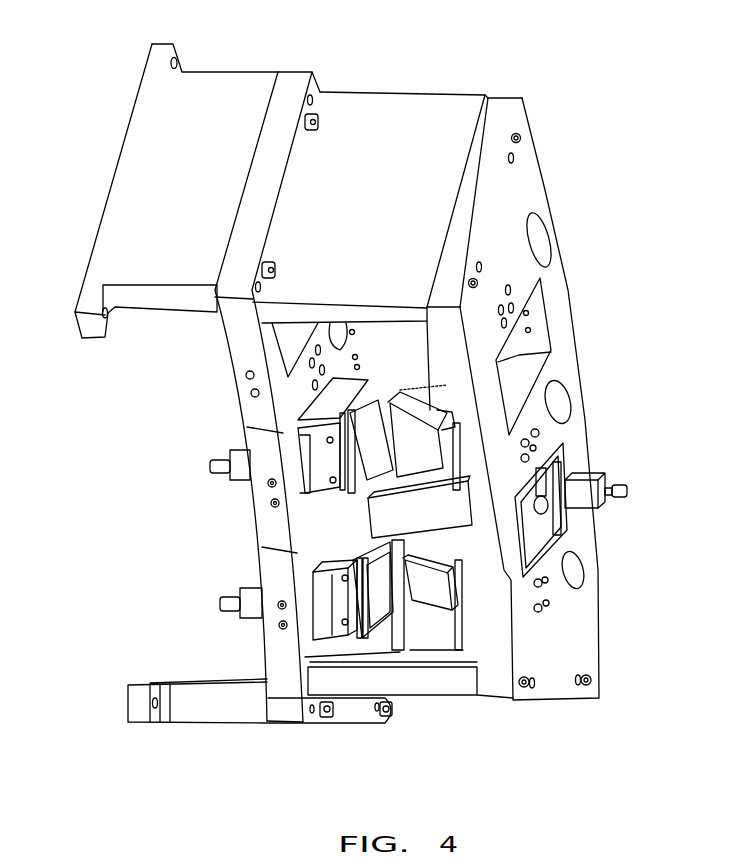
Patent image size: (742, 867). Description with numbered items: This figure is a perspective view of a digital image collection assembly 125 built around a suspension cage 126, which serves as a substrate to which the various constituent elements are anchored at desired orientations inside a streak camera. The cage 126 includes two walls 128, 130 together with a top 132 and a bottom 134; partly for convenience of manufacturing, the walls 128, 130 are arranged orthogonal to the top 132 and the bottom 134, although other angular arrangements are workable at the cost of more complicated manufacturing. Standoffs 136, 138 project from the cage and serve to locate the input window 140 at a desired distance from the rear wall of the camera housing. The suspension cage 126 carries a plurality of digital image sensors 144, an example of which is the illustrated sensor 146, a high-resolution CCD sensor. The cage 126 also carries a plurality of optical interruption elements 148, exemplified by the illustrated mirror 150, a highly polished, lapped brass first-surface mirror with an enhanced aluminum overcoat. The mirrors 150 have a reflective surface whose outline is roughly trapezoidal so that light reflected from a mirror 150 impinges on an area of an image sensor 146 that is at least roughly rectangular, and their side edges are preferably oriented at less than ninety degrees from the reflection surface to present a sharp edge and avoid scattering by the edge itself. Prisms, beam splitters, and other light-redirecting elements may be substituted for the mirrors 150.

The digital image collection assembly 125 is at (384, 395).
The suspension cage 126 is at (347, 395).
The wall 128 is at (398, 113).
The wall 130 is at (416, 688).
The top 132 is at (563, 315).
The bottom 134 is at (235, 338).
The standoff 136 is at (127, 177).
The standoff 138 is at (137, 705).
The input window 140 is at (403, 357).
The digital image sensors 144 is at (557, 572).
The sensor 146 is at (421, 397).
The optical interruption elements 148 is at (432, 508).
The mirror 150 is at (416, 521).